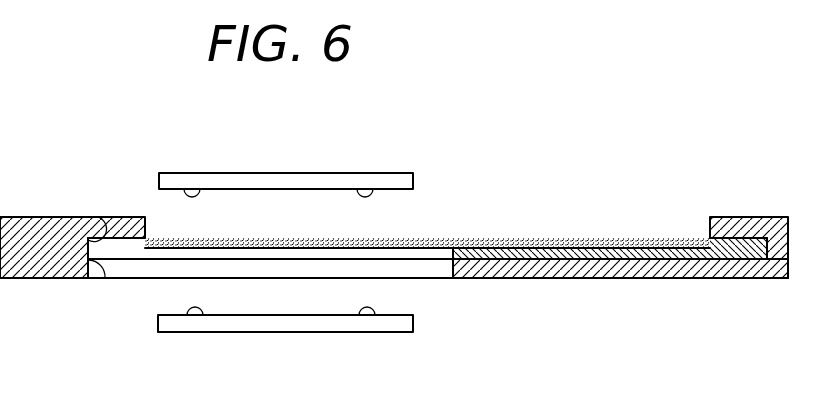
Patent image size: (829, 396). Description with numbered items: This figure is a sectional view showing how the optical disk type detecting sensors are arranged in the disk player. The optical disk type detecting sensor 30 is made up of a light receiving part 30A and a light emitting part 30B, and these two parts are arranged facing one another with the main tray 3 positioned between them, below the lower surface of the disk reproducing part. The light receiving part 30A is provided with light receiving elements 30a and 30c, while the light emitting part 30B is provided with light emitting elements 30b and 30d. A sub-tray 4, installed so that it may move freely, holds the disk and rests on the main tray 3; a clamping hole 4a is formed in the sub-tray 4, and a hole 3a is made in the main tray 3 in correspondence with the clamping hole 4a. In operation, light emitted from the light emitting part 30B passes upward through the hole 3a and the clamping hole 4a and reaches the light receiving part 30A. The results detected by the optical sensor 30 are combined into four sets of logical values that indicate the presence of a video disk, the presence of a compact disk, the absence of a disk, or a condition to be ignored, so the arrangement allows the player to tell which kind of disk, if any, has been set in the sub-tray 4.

The main tray 3 is at (48, 218).
The hole 3a is at (105, 279).
The sub-tray 4 is at (739, 217).
The clamping hole 4a is at (99, 218).
The optical disk type detecting sensor 30 is at (456, 243).
The light receiving part 30A is at (307, 169).
The light emitting part 30B is at (585, 237).
The light receiving element 30a is at (200, 196).
The light emitting element 30b is at (205, 305).
The light receiving element 30c is at (373, 195).
The light emitting element 30d is at (374, 307).